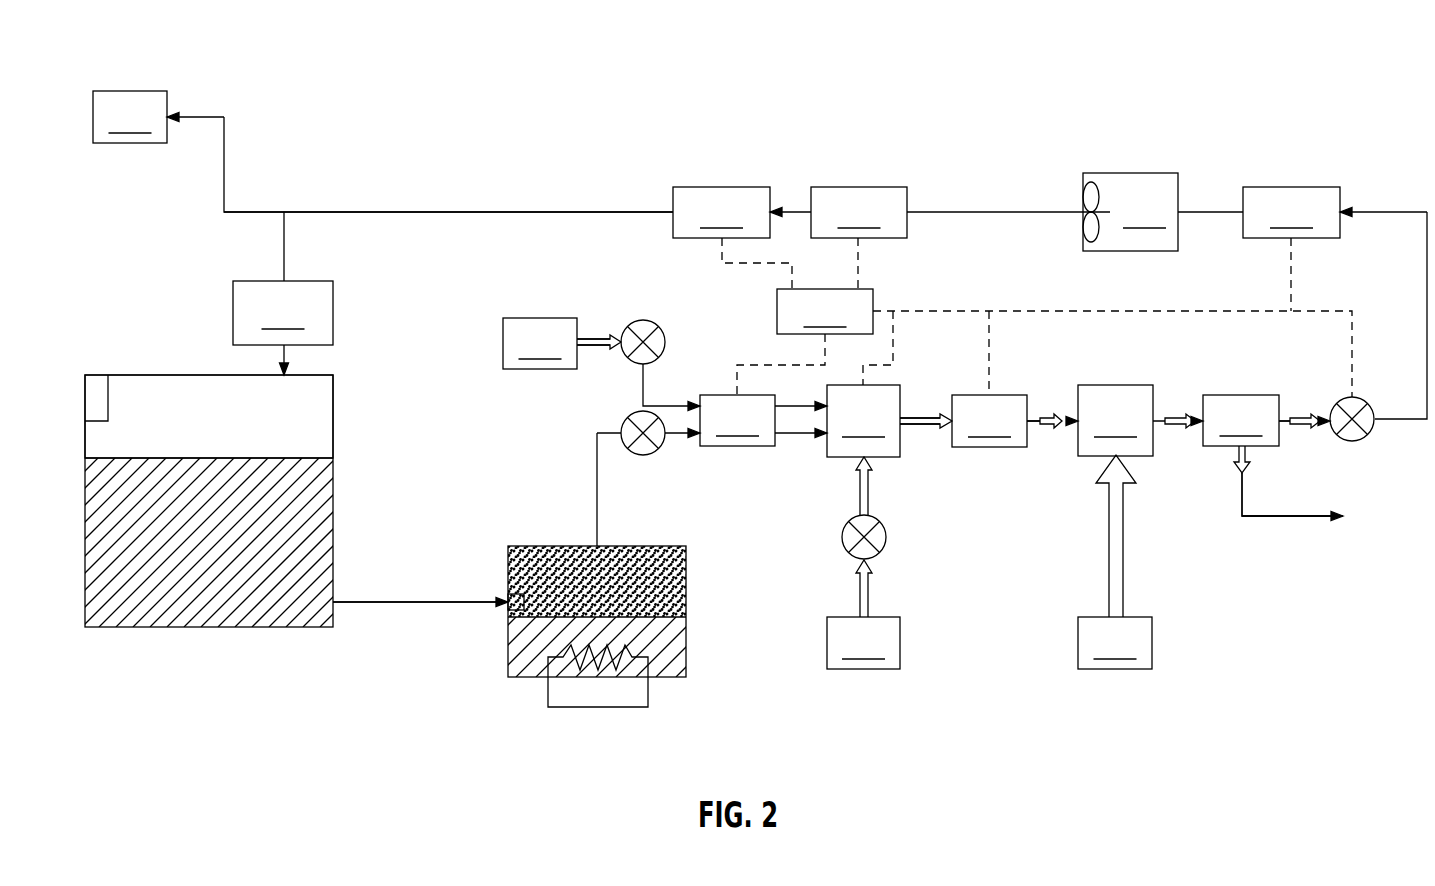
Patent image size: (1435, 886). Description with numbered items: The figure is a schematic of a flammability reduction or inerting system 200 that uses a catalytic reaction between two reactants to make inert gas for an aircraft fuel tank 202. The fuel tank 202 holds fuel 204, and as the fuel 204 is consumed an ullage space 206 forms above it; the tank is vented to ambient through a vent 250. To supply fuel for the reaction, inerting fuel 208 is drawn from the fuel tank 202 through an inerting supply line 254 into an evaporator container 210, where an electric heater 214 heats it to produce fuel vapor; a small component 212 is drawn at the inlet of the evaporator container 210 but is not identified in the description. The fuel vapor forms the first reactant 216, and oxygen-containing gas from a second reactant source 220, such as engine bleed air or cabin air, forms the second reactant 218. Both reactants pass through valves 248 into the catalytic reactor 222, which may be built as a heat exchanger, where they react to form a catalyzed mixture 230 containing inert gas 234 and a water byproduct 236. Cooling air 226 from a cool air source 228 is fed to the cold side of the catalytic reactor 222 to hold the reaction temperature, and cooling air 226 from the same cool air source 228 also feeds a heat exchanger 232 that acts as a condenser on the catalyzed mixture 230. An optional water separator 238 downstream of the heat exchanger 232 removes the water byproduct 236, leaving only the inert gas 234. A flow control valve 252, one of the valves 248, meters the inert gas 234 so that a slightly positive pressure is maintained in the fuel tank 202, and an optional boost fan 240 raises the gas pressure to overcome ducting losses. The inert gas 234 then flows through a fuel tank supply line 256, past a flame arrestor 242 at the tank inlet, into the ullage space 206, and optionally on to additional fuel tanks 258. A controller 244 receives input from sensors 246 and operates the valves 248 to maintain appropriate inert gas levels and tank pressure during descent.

The inerting system 200 is at (136, 66).
The fuel tank 202 is at (165, 375).
The fuel 204 is at (205, 610).
The ullage space 206 is at (314, 418).
The inerting fuel 208 is at (688, 647).
The evaporator container 210 is at (535, 546).
The fuel injector nozzle 212 is at (503, 606).
The electric heater 214 is at (648, 690).
The first reactant 216 is at (795, 442).
The second reactant 218 is at (595, 337).
The second reactant source 220 is at (540, 343).
The catalytic reactor 222 is at (863, 421).
The cooling air 226 is at (868, 490).
The cool air source 228 is at (989, 643).
The catalyzed mixture 230 is at (912, 415).
The heat exchanger 232 is at (1115, 420).
The inert gas 234 is at (1300, 415).
The byproduct 236 is at (1235, 456).
The water separator 238 is at (1241, 420).
The boost fan 240 is at (1130, 212).
The flame arrestor 242 is at (283, 313).
The controller 244 is at (825, 311).
The sensors 246 is at (1006, 317).
The valves 248 is at (647, 318).
The vent 250 is at (100, 385).
The flow control valve 252 is at (1355, 452).
The inerting supply line 254 is at (378, 602).
The fuel tank supply line 256 is at (440, 212).
The additional fuel tanks 258 is at (130, 117).